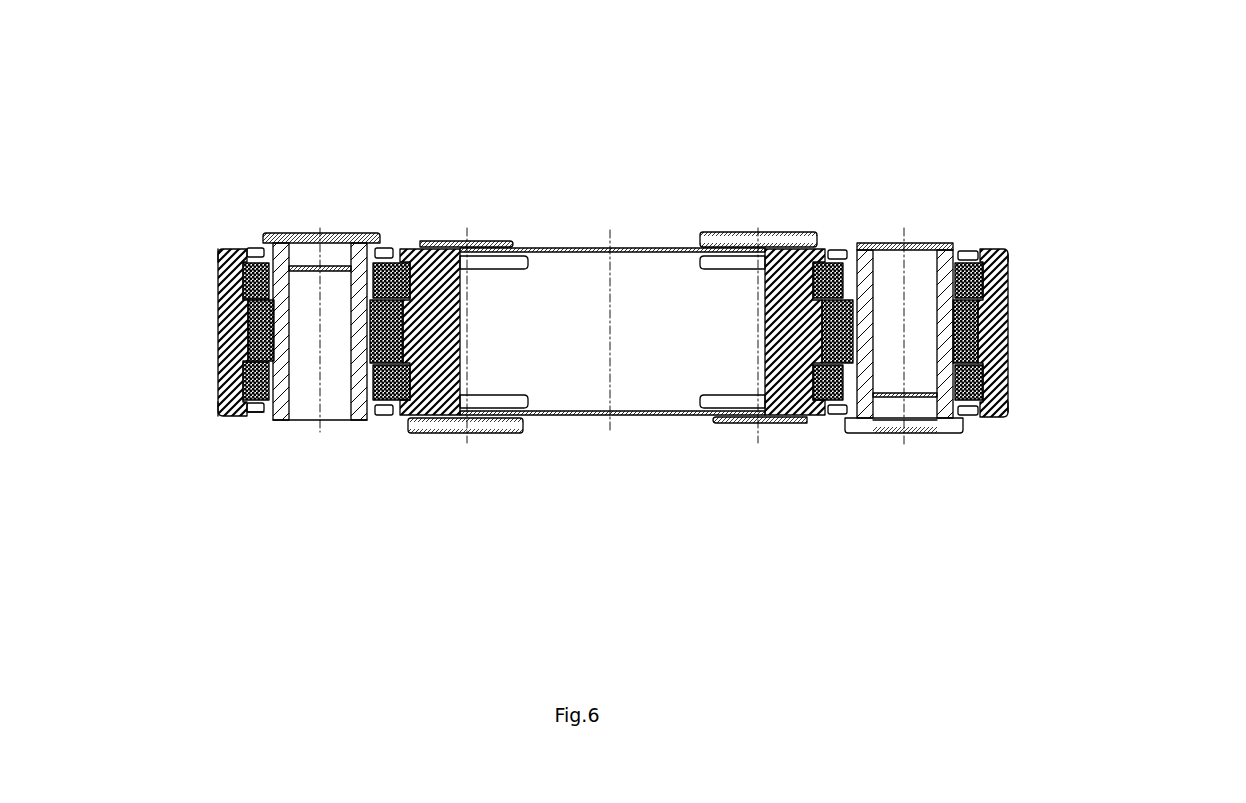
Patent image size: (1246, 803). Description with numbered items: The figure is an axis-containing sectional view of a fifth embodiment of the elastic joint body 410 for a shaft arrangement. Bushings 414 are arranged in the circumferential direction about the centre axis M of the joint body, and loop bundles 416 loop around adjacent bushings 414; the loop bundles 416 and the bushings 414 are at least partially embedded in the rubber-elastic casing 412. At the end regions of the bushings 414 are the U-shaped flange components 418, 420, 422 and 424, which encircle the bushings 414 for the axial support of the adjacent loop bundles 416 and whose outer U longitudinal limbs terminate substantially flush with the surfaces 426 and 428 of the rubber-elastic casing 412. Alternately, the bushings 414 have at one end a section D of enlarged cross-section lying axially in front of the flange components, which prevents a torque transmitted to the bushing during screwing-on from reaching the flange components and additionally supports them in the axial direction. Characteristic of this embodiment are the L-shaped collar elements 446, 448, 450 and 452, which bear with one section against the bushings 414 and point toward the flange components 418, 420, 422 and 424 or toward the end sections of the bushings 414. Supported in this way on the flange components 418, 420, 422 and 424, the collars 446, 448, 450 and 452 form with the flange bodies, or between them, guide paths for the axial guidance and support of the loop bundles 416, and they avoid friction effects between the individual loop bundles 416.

The elastic joint body 410 is at (1092, 108).
The rubber-elastic casing 412 is at (415, 249).
The bushings 414 is at (393, 247).
The loop bundles 416 is at (217, 285).
The flange component 418 is at (263, 233).
The flange component 420 is at (267, 417).
The flange component 422 is at (980, 250).
The flange component 424 is at (823, 417).
The surface of the rubber-elastic casing 426 is at (225, 248).
The surface of the rubber-elastic casing 428 is at (997, 418).
The L-shaped collar element 446 is at (217, 265).
The L-shaped collar element 448 is at (217, 401).
The L-shaped collar element 450 is at (982, 250).
The L-shaped collar element 452 is at (1008, 412).
The centre axis M is at (610, 250).
The section of enlarged cross-section D is at (288, 233).